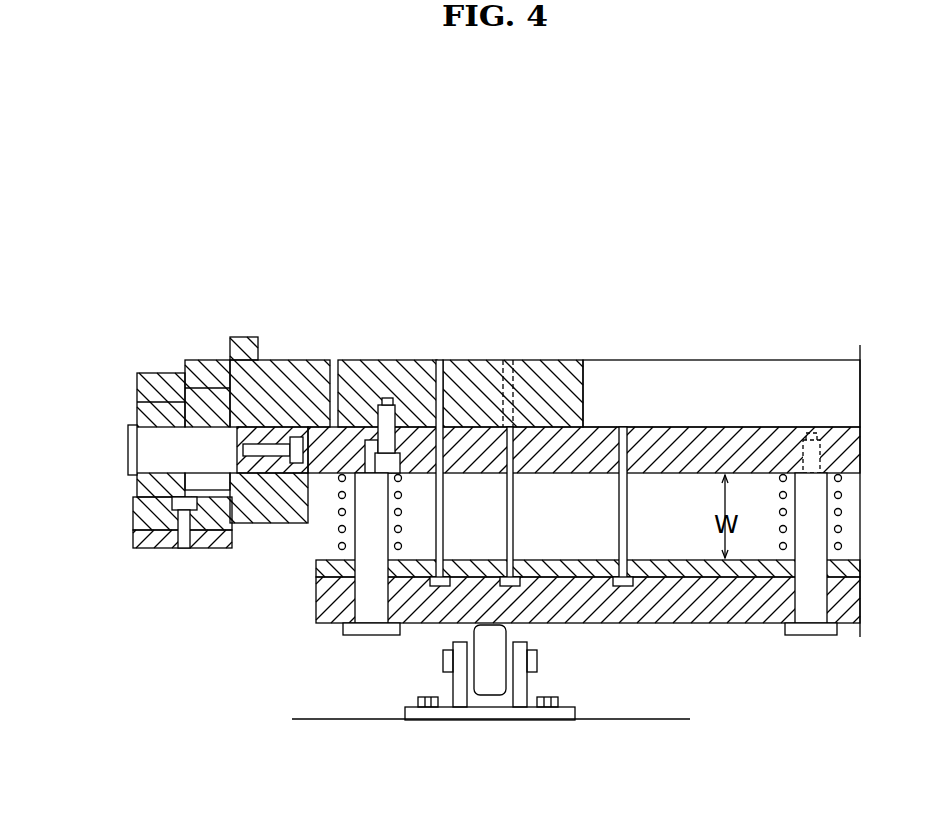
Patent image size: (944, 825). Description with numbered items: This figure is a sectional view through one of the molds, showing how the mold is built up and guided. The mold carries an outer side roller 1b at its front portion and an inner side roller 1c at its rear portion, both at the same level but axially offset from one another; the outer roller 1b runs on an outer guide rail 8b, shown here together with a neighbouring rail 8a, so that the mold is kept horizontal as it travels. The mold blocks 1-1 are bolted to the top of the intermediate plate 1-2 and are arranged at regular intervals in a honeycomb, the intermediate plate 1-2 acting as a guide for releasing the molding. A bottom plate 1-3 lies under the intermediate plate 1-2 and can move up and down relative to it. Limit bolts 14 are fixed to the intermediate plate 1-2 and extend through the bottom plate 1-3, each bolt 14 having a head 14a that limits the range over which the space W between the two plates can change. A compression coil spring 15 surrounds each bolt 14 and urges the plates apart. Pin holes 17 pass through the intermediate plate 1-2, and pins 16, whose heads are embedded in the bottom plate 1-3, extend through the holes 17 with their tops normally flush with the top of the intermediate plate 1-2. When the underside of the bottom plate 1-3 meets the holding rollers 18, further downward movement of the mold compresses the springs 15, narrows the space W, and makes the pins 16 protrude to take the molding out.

The outer side roller 1b is at (148, 410).
The inner side roller 1c is at (205, 418).
The bolt 8a is at (215, 495).
The outer guide rail 8b is at (133, 515).
The mold blocks 1-1 is at (360, 360).
The intermediate plate 1-2 is at (713, 430).
The bottom plate 1-3 is at (323, 600).
The limit bolt 14 is at (385, 533).
The head 14a is at (357, 630).
The compression coil spring 15 is at (337, 532).
The pin 16 is at (432, 505).
The pin hole 17 is at (507, 460).
The holding roller 18 is at (490, 680).